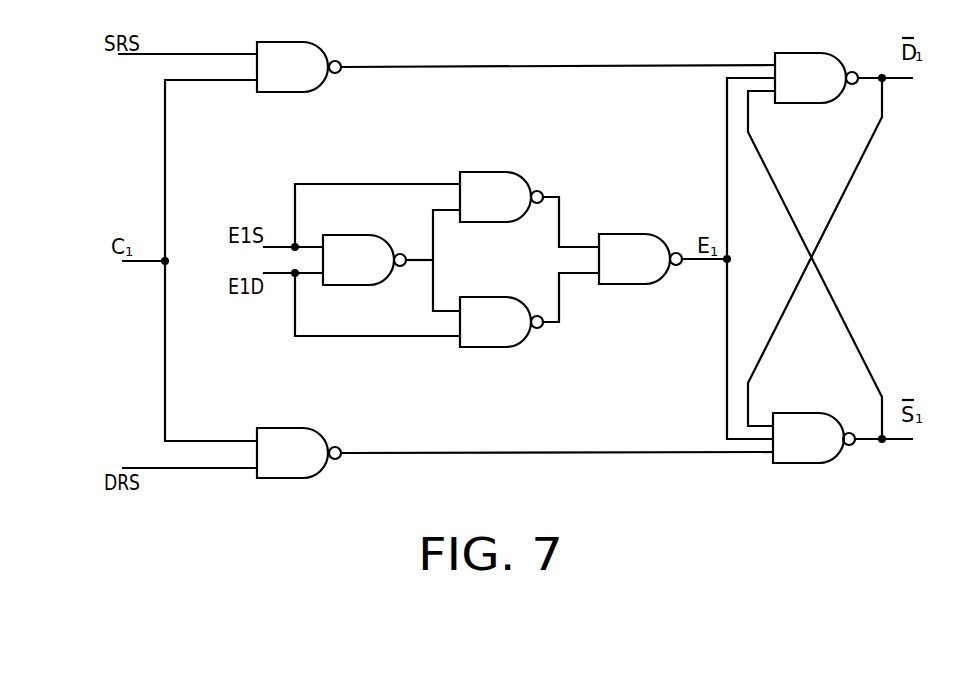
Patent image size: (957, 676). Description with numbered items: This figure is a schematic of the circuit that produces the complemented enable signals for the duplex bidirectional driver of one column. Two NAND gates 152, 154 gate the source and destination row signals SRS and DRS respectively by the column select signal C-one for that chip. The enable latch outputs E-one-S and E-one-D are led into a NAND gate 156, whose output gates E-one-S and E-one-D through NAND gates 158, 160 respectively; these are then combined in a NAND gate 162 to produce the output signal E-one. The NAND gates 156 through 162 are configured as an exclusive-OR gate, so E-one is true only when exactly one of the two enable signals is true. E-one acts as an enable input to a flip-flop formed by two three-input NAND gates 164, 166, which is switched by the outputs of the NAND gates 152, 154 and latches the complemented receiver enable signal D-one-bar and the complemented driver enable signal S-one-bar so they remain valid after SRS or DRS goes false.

The NAND gate 152 is at (268, 81).
The NAND gate 154 is at (268, 467).
The NAND gate 156 is at (334, 274).
The NAND gate 158 is at (471, 211).
The NAND gate 160 is at (471, 336).
The NAND gate 162 is at (610, 273).
The three-input NAND gate 164 is at (786, 92).
The three-input NAND gate 166 is at (784, 453).